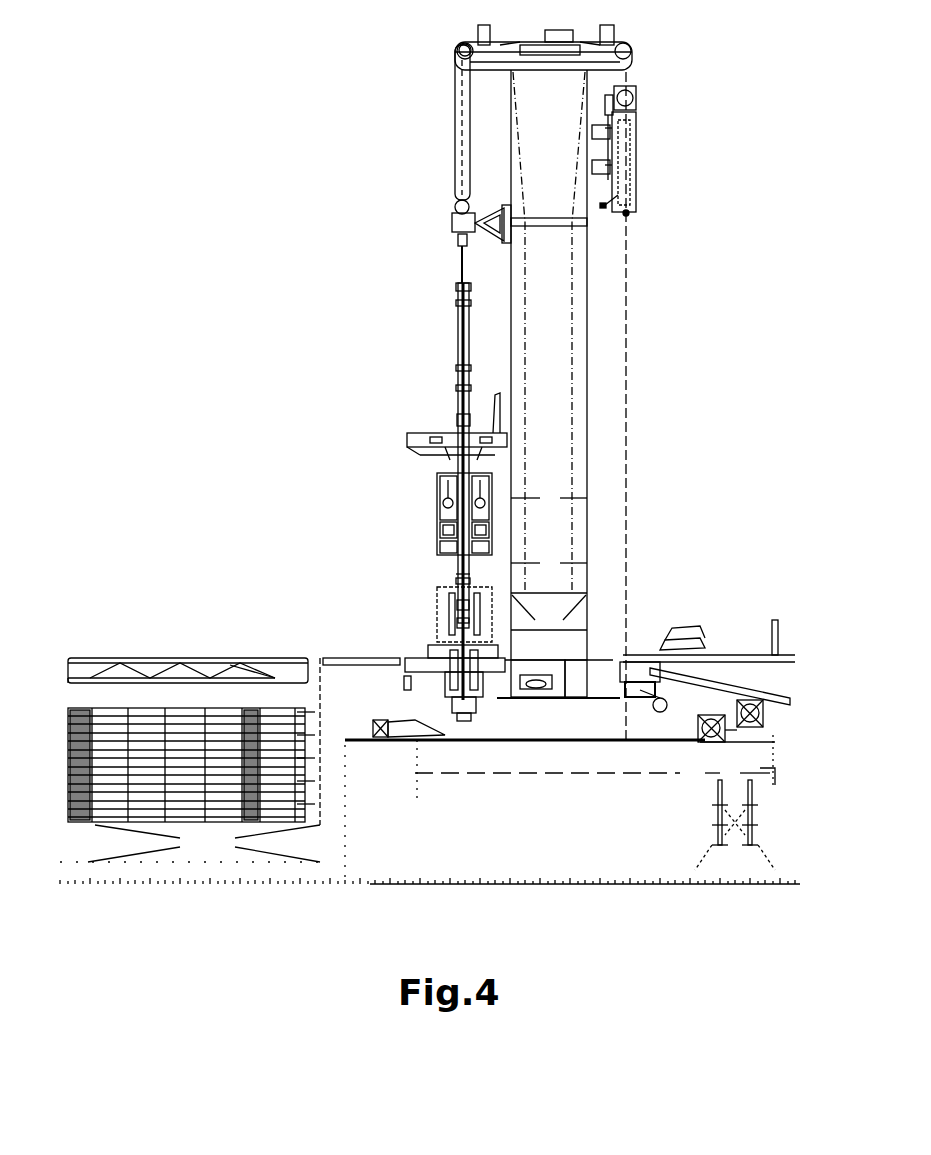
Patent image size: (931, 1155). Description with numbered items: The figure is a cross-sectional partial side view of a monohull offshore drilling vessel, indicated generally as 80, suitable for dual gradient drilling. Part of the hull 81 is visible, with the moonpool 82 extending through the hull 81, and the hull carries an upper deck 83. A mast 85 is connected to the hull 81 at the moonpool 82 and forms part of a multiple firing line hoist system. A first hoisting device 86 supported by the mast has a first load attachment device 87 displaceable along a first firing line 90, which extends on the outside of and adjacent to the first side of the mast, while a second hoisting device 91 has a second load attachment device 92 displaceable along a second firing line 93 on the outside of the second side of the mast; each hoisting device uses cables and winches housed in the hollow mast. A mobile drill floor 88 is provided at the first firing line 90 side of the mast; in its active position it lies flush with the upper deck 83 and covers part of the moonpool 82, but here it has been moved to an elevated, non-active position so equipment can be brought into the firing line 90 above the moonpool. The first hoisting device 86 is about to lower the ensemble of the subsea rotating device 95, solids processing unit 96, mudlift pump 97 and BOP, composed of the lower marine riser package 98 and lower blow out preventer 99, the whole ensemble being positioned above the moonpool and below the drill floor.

The drilling installation 80 is at (312, 488).
The hull 81 is at (301, 845).
The moonpool 82 is at (454, 812).
The upper deck 83 is at (155, 660).
The mast 85 is at (558, 384).
The first hoisting device 86 is at (479, 212).
The first load attachment device 87 is at (455, 231).
The mobile drill floor 88 is at (420, 438).
The first firing line 90 is at (462, 120).
The second hoisting device 91 is at (642, 76).
The second load attachment device 92 is at (636, 195).
The second firing line 93 is at (628, 257).
The subsea rotating device 95 is at (458, 355).
The solids processing unit 96 is at (458, 420).
The mudlift pump 97 is at (437, 525).
The lower marine riser package 98 is at (437, 598).
The lower blow out preventer 99 is at (445, 698).